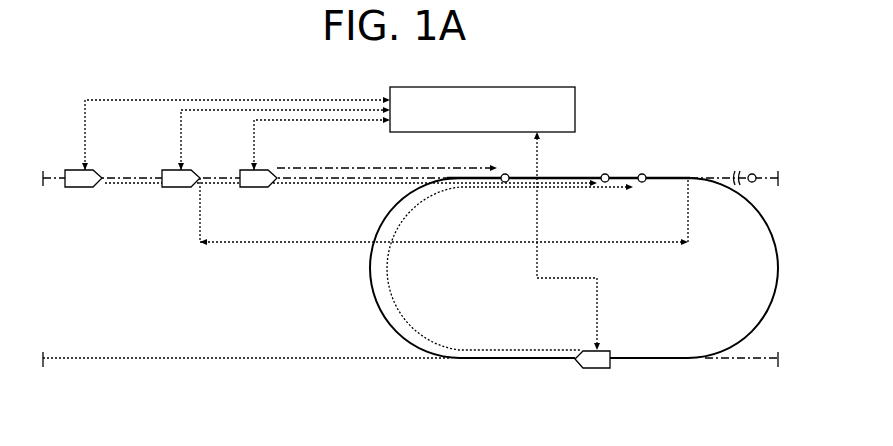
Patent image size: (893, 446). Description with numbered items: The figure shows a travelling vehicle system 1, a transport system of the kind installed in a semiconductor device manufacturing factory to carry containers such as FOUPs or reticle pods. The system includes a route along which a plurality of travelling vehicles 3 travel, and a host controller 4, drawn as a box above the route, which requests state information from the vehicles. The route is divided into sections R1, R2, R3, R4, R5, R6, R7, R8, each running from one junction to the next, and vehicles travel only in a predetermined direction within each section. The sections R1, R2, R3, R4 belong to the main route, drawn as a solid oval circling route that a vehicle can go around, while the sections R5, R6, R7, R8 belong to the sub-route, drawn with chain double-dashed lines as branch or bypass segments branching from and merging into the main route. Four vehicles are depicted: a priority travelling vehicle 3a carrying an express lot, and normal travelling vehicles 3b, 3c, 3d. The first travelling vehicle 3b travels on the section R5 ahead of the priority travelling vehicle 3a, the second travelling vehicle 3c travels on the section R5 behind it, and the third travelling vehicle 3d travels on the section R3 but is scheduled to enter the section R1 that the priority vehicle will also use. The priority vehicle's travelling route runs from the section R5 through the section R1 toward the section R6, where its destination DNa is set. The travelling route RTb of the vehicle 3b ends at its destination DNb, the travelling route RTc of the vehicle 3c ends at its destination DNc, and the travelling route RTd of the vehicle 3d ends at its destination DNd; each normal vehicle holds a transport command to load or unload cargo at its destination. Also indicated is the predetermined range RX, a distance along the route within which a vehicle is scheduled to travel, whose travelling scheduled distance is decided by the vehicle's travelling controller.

The travelling vehicle system 1 is at (680, 92).
The travelling vehicle 3 is at (349, 292).
The priority travelling vehicle 3a is at (177, 190).
The first travelling vehicle 3b is at (255, 190).
The second travelling vehicle 3c is at (83, 190).
The third travelling vehicle 3d is at (595, 372).
The host controller 4 is at (474, 86).
The section R1 is at (562, 175).
The section R2 is at (776, 265).
The section R3 is at (641, 357).
The section R4 is at (367, 268).
The section R5 is at (322, 181).
The section R6 is at (726, 177).
The section R7 is at (323, 362).
The section R8 is at (756, 364).
The predetermined range RX is at (444, 211).
The travelling route RTb is at (350, 167).
The travelling route RTc is at (135, 185).
The travelling route RTd is at (500, 349).
The destination DNa is at (752, 173).
The destination DNb is at (505, 174).
The destination DNc is at (604, 173).
The destination DNd is at (643, 173).